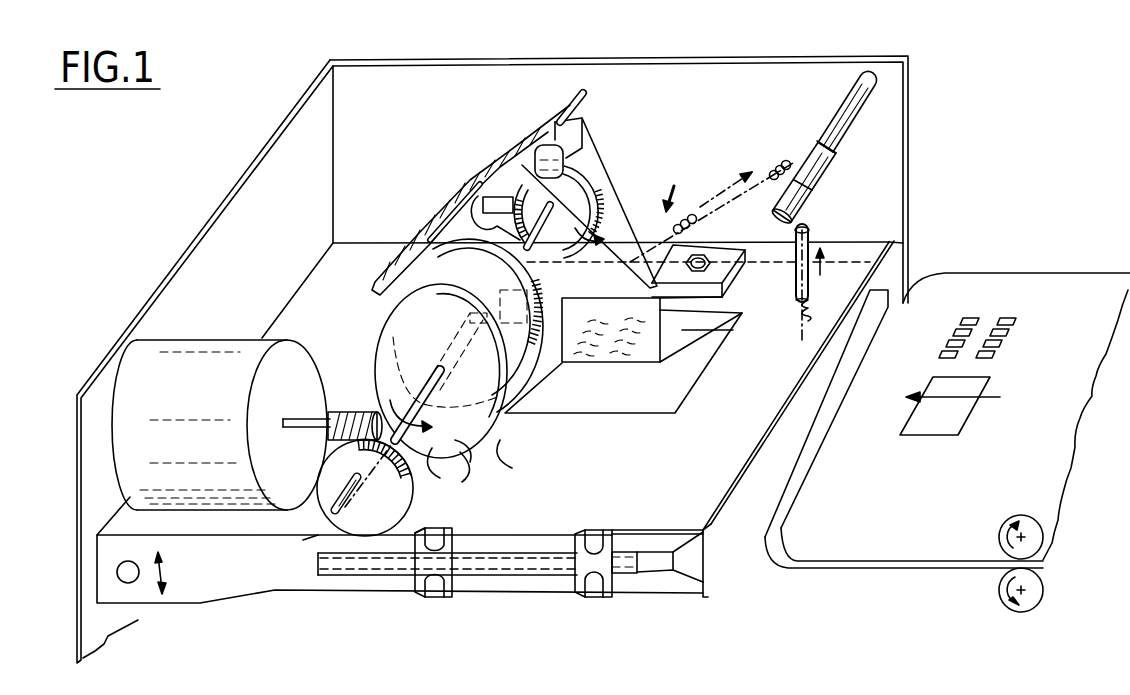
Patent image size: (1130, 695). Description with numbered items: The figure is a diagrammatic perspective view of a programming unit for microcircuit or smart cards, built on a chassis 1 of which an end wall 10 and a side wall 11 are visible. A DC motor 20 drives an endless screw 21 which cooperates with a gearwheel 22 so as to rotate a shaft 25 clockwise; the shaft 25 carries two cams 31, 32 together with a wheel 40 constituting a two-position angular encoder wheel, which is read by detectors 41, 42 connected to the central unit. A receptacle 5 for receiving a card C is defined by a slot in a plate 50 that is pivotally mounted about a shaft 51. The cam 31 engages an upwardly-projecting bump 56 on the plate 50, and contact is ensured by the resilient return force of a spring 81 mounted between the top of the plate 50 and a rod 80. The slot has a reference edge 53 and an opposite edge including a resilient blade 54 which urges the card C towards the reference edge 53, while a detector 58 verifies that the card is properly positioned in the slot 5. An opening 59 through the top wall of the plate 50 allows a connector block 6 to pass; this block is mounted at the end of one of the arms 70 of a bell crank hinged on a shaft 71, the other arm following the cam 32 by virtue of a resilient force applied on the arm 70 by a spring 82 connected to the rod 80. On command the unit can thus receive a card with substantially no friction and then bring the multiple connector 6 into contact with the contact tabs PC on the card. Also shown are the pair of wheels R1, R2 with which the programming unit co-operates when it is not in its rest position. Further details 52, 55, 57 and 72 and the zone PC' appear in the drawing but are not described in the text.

The chassis 1 is at (197, 199).
The receptacle 5 is at (652, 568).
The connector block 6 is at (655, 345).
The end wall 10 is at (175, 262).
The side wall 11 is at (390, 78).
The DC motor 20 is at (145, 392).
The endless screw 21 is at (350, 412).
The gearwheel 22 is at (392, 514).
The shaft 25 is at (333, 497).
The cam 31 is at (380, 352).
The cam 32 is at (405, 297).
The wheel 40 is at (585, 205).
The detector 41 is at (587, 128).
The detector 42 is at (482, 198).
The plate 50 is at (225, 578).
The shaft 51 is at (133, 582).
The shaft end 52 is at (320, 548).
The reference edge 53 is at (895, 266).
The resilient blade 54 is at (517, 555).
The bearings 55 is at (592, 592).
The bump 56 is at (455, 475).
The plate edge 57 is at (720, 538).
The detector 58 is at (560, 283).
The opening 59 is at (655, 390).
The arm 70 is at (625, 210).
The shaft 71 is at (570, 107).
The arm 72 is at (422, 222).
The rod 80 is at (853, 122).
The spring 81 is at (810, 232).
The spring 82 is at (762, 173).
The card C is at (1097, 287).
The contact tabs PC is at (981, 319).
The mark field PC' is at (978, 393).
The wheel R1 is at (1040, 502).
The wheel R2 is at (1040, 608).